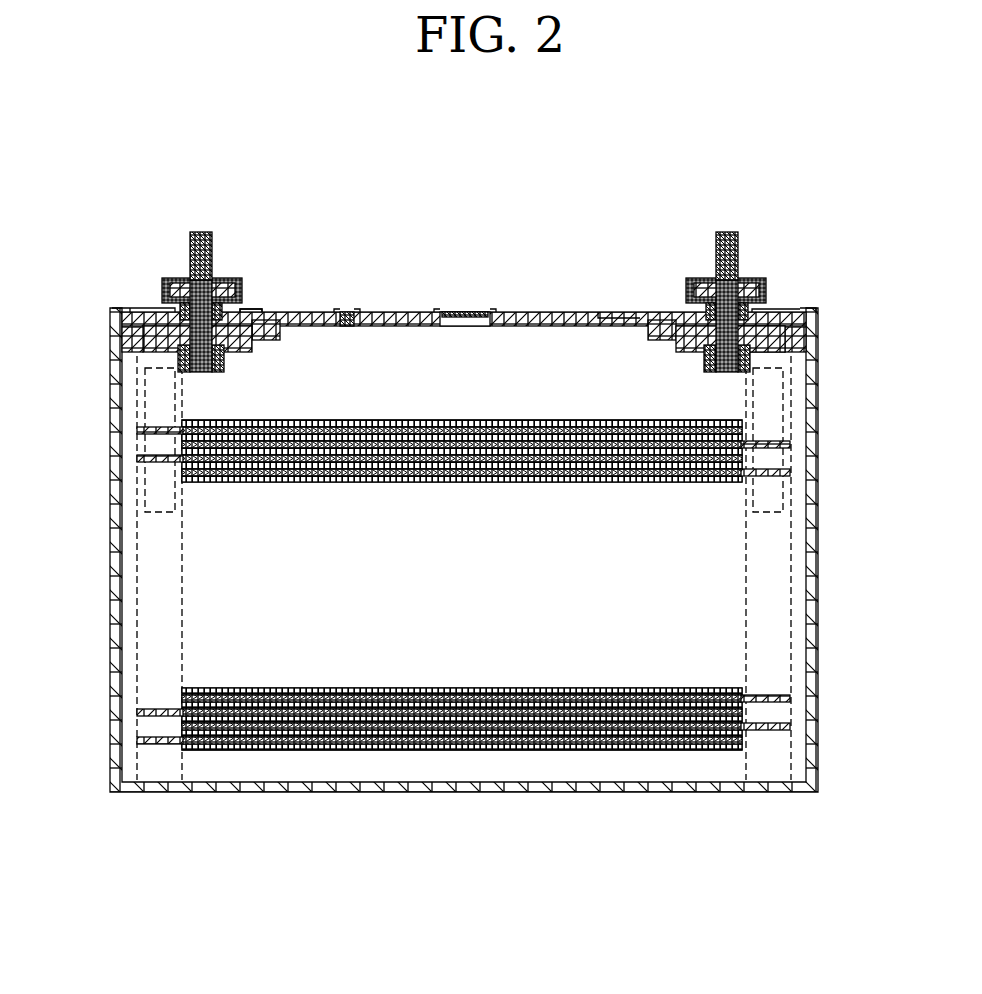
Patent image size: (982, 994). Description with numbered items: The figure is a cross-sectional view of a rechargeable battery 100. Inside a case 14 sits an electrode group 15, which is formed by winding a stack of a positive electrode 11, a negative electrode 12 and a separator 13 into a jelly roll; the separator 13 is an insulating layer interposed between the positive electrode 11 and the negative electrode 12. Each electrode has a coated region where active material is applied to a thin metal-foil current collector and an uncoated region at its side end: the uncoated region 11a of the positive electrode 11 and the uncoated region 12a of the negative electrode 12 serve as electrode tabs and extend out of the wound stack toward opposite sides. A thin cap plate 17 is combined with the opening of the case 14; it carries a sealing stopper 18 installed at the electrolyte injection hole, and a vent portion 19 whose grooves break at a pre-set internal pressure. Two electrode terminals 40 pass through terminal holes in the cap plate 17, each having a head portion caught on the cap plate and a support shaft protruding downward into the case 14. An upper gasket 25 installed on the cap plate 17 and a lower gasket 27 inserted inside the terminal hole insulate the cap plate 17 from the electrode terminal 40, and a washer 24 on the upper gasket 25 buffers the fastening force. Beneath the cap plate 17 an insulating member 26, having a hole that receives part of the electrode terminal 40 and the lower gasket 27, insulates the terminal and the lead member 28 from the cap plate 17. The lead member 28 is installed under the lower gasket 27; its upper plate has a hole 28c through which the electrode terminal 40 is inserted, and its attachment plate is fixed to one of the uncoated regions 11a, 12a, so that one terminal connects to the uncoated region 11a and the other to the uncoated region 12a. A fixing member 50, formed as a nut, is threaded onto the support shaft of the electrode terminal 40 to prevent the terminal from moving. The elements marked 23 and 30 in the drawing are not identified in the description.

The rechargeable battery 100 is at (482, 166).
The positive electrode 11 is at (275, 746).
The uncoated region 11a is at (157, 744).
The negative electrode 12 is at (320, 733).
The uncoated region 12a is at (765, 730).
The separator 13 is at (447, 722).
The case 14 is at (810, 508).
The electrode group 15 is at (549, 652).
The cap plate 17 is at (536, 312).
The sealing stopper 18 is at (347, 312).
The vent portion 19 is at (458, 312).
The terminal hole 23 is at (600, 322).
The washer 24 is at (704, 318).
The upper gasket 25 is at (744, 320).
The insulating member 26 is at (806, 340).
The lower gasket 27 is at (682, 338).
The lead member 28 is at (133, 337).
The hole 28c is at (145, 385).
The terminal 30 is at (212, 240).
The electrode terminal 40 is at (755, 290).
The fixing member 50 is at (224, 365).